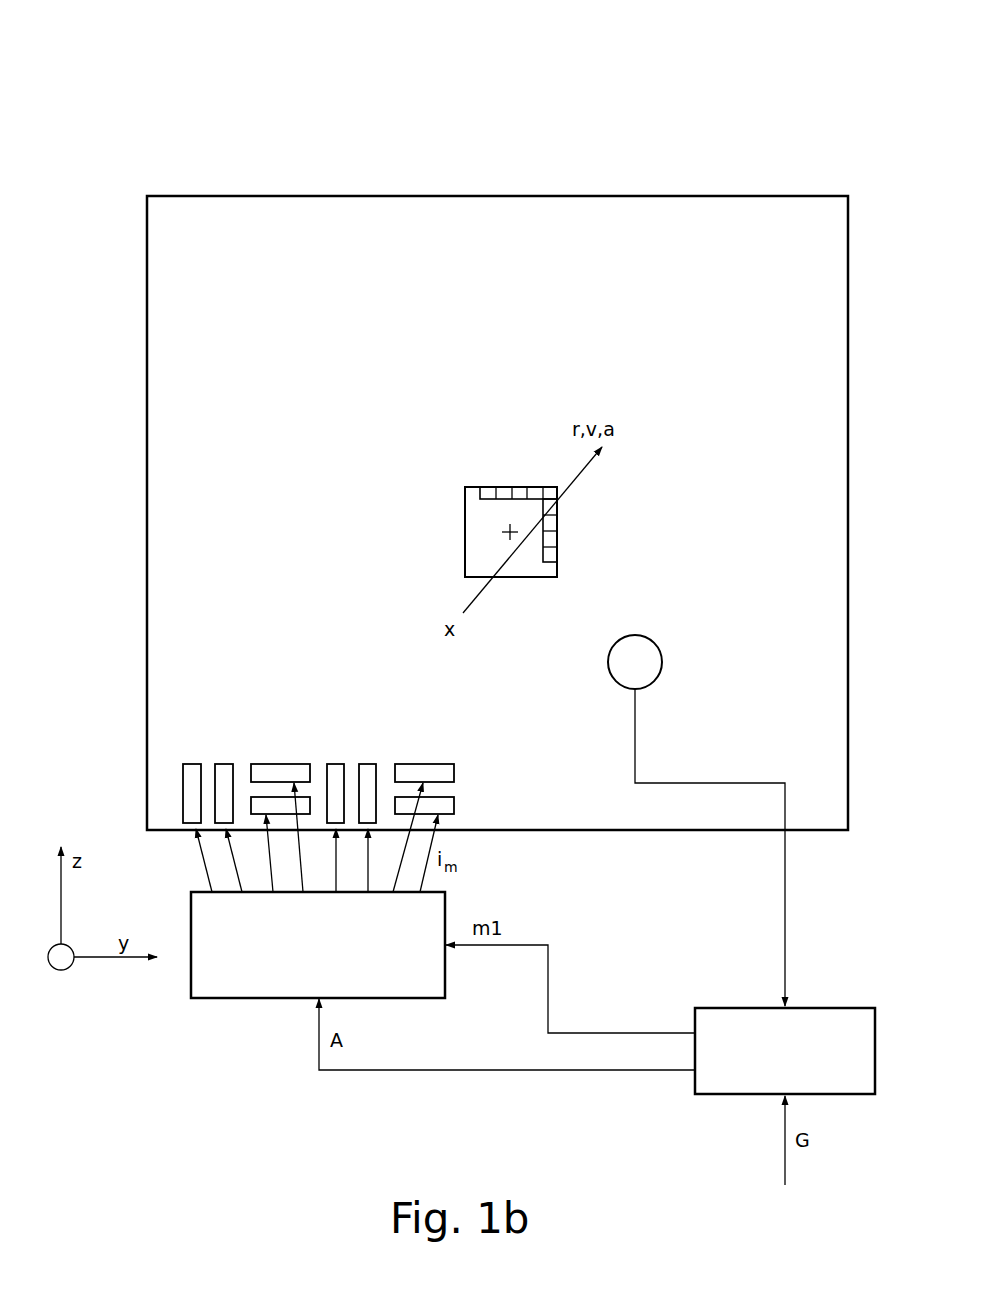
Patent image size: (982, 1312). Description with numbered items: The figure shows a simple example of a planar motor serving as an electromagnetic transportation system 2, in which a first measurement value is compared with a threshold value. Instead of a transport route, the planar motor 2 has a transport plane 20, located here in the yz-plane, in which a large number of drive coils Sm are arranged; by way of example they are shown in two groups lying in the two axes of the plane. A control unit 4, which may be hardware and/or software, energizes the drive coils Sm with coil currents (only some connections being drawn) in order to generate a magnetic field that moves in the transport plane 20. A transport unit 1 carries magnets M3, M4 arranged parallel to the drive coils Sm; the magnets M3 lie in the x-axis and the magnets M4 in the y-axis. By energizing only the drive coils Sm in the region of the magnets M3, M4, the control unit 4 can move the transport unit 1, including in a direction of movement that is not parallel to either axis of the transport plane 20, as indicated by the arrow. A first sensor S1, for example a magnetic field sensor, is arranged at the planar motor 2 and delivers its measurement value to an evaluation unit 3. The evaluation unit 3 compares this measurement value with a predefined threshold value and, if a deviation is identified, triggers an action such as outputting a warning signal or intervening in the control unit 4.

The transport unit 1 is at (484, 534).
The electromagnetic transportation system 2 is at (182, 113).
The evaluation unit 3 is at (844, 1007).
The control unit 4 is at (335, 958).
The transport plane 20 is at (380, 258).
The magnets M3 is at (535, 496).
The magnets M4 is at (550, 508).
The drive coils Sm is at (268, 774).
The first sensor S1 is at (660, 653).